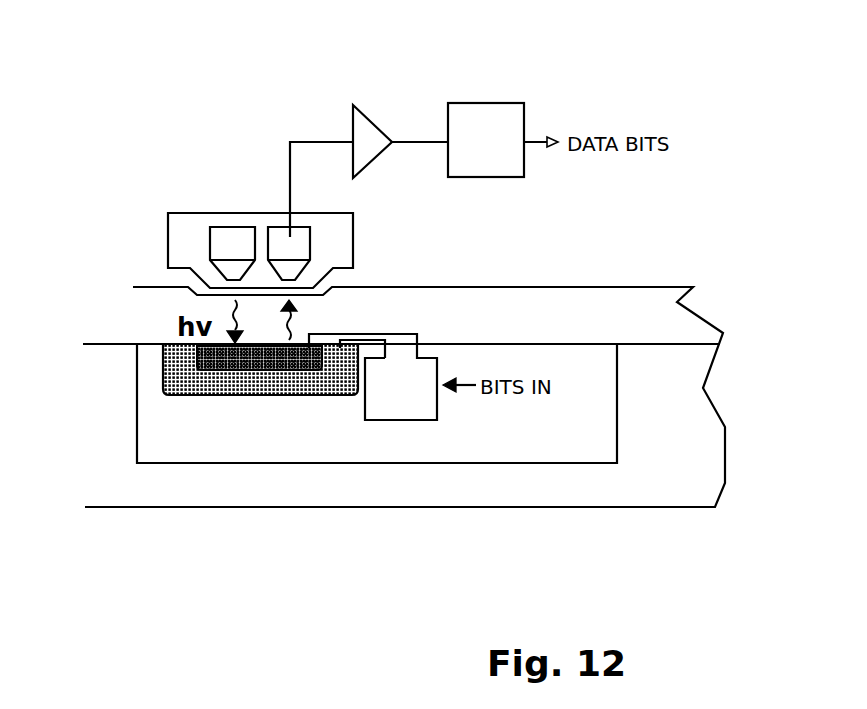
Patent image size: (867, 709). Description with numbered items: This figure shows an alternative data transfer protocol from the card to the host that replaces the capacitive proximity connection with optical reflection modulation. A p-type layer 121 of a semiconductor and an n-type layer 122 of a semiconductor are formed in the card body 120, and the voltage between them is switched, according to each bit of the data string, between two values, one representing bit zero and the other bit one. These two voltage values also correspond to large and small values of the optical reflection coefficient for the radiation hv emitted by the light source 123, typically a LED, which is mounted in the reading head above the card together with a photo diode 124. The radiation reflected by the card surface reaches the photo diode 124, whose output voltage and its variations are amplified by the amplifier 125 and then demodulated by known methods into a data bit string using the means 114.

The means 114 is at (470, 103).
The amplifier 125 is at (352, 118).
The light source 123 is at (228, 235).
The photo diode 124 is at (292, 235).
The p-type layer 121 is at (195, 383).
The n-type layer 122 is at (263, 362).
The substrate 120 is at (335, 448).